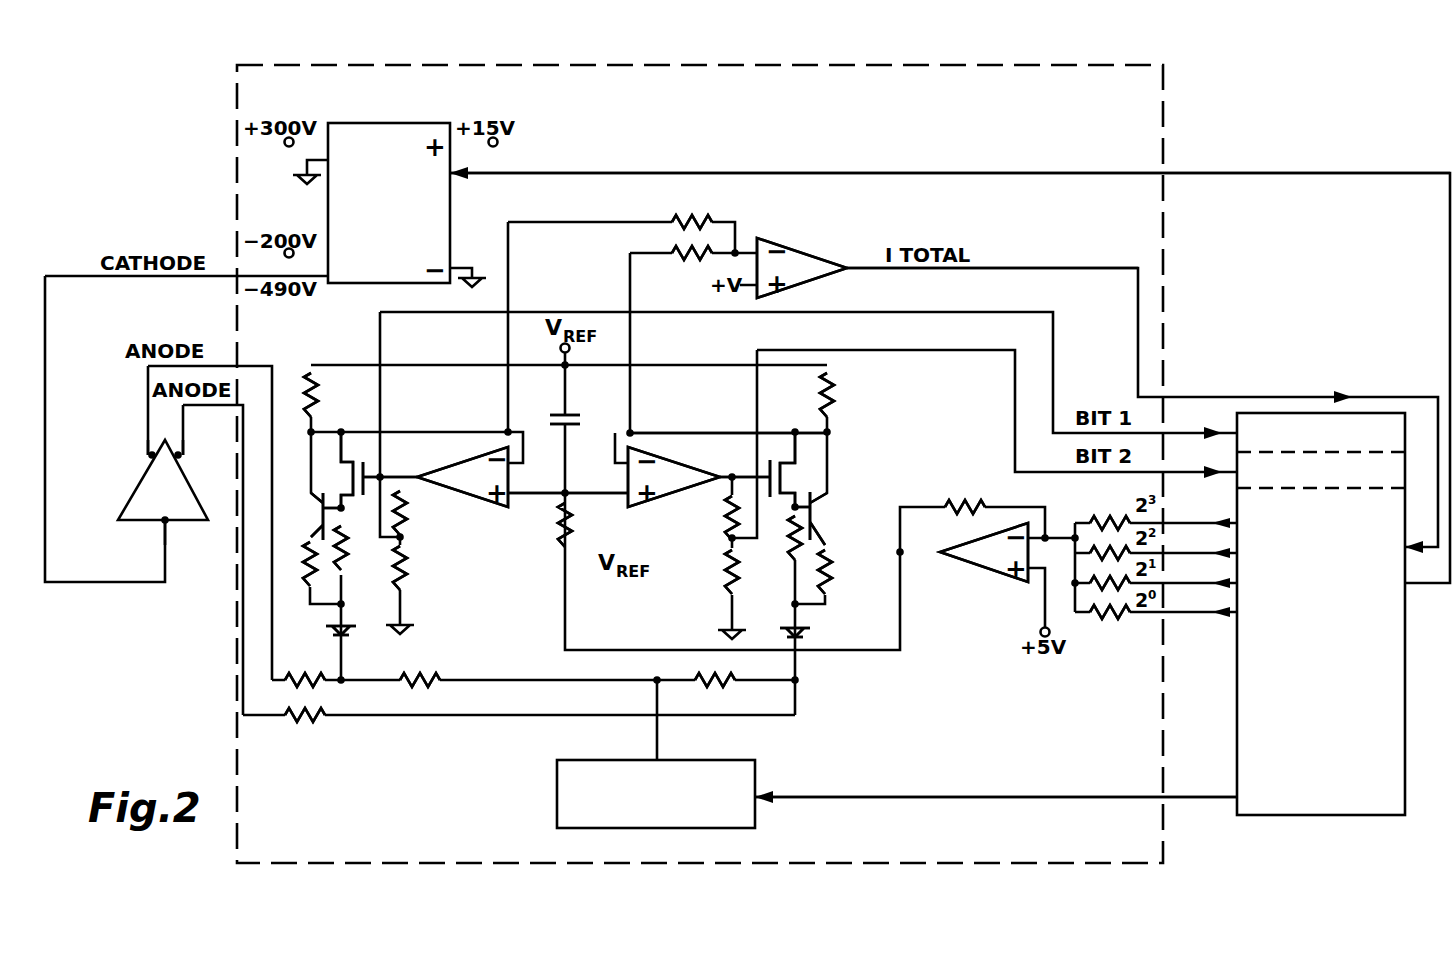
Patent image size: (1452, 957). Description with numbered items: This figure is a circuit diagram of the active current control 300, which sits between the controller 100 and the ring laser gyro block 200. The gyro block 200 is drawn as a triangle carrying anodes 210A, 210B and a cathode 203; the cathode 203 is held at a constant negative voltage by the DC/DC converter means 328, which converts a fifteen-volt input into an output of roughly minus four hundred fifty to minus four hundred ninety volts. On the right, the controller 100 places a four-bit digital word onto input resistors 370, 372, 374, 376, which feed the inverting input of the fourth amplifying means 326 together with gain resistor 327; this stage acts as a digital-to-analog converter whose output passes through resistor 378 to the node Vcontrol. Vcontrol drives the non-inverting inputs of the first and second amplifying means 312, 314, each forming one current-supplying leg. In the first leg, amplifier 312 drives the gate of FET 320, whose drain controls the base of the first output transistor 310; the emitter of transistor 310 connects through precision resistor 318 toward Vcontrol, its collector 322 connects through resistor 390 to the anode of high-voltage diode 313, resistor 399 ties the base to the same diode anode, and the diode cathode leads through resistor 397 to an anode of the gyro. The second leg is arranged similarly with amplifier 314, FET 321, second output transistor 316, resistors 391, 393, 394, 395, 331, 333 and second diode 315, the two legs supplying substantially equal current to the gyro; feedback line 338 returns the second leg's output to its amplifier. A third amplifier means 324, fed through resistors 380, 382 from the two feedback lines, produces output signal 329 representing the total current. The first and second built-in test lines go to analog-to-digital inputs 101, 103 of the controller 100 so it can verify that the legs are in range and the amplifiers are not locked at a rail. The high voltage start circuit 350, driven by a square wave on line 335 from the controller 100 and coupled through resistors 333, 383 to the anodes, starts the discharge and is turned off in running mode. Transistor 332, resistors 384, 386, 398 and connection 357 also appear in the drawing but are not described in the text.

The controller 100 is at (1321, 614).
The first analog-to-digital input 101 is at (1397, 420).
The second analog-to-digital input 103 is at (1388, 483).
The ring laser gyro block 200 is at (163, 480).
The cathode 203 is at (165, 523).
The anode 210A is at (180, 458).
The anode 210B is at (150, 462).
The active current control 300 is at (700, 464).
The first output transistor 310 is at (330, 510).
The first amplifying means 312 is at (504, 500).
The diode 313 is at (356, 632).
The second amplifying means 314 is at (634, 500).
The second diode 315 is at (812, 634).
The second output transistor 316 is at (790, 495).
The precision resistor 318 is at (316, 412).
The field effect transistor 320 is at (375, 475).
The field effect transistor 321 is at (770, 475).
The collector 322 is at (318, 525).
The third amplifier means 324 is at (795, 262).
The fourth amplifying means 326 is at (1015, 576).
The gain resistor 327 is at (980, 505).
The DC/DC converter means 328 is at (437, 131).
The output signal 329 is at (1035, 268).
The precision resistor 331 is at (830, 397).
The transistor 332 is at (815, 512).
The resistor 333 is at (722, 686).
The line 335 is at (1028, 797).
The feedback line 338 is at (658, 433).
The high voltage start circuit 350 is at (730, 828).
The control line 357 is at (1200, 173).
The first input resistor 370 is at (1168, 524).
The second input resistor 372 is at (1168, 554).
The third input resistor 374 is at (1168, 584).
The fourth input resistor 376 is at (1168, 613).
The resistor 378 is at (562, 548).
The resistor 380 is at (702, 222).
The resistor 382 is at (672, 248).
The resistor 383 is at (428, 686).
The resistor 384 is at (403, 579).
The resistor 386 is at (403, 527).
The resistor 390 is at (306, 565).
The resistance component 391 is at (730, 512).
The resistance component 393 is at (728, 572).
The resistor 394 is at (788, 545).
The resistor 395 is at (575, 418).
The resistor 397 is at (318, 686).
The resistor 398 is at (318, 721).
The resistor 399 is at (346, 556).